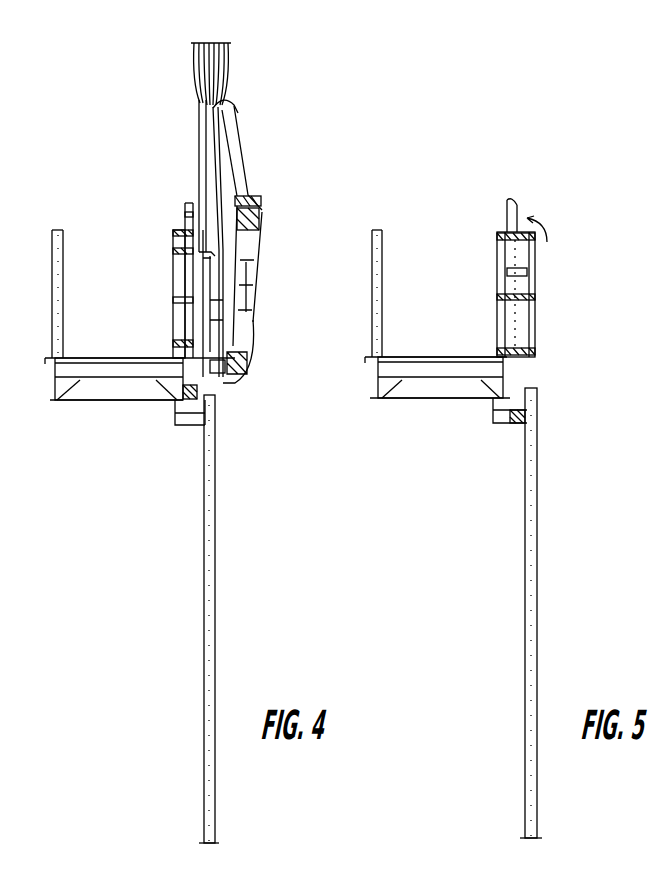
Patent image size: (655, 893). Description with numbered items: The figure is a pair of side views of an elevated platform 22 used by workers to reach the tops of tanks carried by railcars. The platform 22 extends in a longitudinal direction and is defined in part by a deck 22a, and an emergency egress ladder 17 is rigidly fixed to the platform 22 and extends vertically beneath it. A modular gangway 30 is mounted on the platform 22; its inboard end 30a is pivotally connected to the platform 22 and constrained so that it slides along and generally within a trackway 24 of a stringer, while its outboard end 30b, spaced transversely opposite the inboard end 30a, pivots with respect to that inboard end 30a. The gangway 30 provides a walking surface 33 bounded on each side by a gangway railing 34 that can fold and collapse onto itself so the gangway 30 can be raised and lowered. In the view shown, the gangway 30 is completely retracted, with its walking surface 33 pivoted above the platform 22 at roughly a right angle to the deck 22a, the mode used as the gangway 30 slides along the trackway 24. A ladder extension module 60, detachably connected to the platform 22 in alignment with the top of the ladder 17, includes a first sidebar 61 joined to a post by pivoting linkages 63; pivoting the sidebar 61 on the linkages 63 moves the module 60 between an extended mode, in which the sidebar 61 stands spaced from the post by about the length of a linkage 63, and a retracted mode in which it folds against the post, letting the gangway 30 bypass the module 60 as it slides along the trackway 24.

In FIG. 4, the emergency egress ladder 17 is at (216, 590).
In FIG. 5, the emergency egress ladder 17 is at (538, 588).
In FIG. 4, the elevated platform 22 is at (96, 424).
In FIG. 4, the deck 22a is at (113, 356).
In FIG. 5, the deck 22a is at (433, 356).
In FIG. 4, the trackway 24 is at (192, 380).
In FIG. 4, the gangway 30 is at (297, 167).
In FIG. 4, the inboard end 30a is at (203, 373).
In FIG. 4, the outboard end 30b is at (263, 204).
In FIG. 4, the walking surface 33 is at (220, 220).
In FIG. 4, the gangway railing 34 is at (200, 151).
In FIG. 4, the ladder extension module 60 is at (171, 205).
In FIG. 5, the ladder extension module 60 is at (558, 259).
In FIG. 5, the first sidebar 61 is at (512, 203).
In FIG. 5, the linkage 63 is at (525, 208).